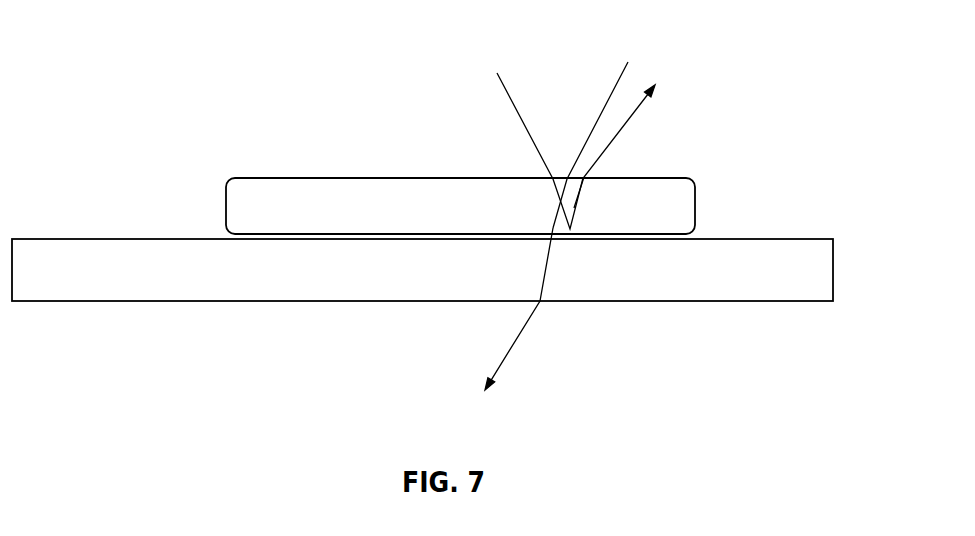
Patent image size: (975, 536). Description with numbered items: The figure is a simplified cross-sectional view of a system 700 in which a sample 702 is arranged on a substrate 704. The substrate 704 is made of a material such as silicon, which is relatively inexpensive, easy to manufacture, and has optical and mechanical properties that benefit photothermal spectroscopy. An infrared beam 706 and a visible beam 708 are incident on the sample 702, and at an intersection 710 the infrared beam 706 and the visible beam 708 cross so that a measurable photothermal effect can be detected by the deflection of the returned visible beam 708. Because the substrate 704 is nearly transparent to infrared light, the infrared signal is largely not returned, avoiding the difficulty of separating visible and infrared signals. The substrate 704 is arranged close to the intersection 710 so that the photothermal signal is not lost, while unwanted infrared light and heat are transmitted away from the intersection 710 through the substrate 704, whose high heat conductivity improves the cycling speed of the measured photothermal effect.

The system 700 is at (206, 45).
The sample 702 is at (673, 187).
The substrate 704 is at (833, 253).
The infrared beam 706 is at (508, 424).
The visible beam 708 is at (684, 78).
The intersection 710 is at (575, 205).